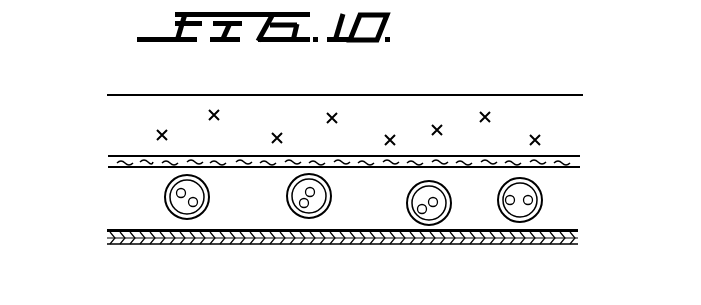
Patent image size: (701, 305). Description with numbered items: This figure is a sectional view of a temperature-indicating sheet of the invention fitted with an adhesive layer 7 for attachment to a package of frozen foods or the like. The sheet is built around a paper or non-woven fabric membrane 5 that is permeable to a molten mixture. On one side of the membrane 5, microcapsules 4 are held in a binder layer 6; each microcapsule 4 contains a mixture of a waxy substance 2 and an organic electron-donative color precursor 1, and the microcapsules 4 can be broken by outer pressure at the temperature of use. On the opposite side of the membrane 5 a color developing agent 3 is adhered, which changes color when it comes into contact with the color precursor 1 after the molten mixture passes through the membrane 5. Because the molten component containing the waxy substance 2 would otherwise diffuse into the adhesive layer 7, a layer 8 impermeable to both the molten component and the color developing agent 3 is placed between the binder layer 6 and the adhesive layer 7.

The organic electron-donative color precursor 1 is at (305, 207).
The waxy substance 2 is at (432, 212).
The color developing agent 3 is at (333, 112).
The microcapsules 4 is at (522, 222).
The paper or non-woven fabric membrane 5 is at (112, 165).
The binder layer 6 is at (570, 135).
The adhesive layer 7 is at (578, 245).
The impermeable layer 8 is at (103, 233).